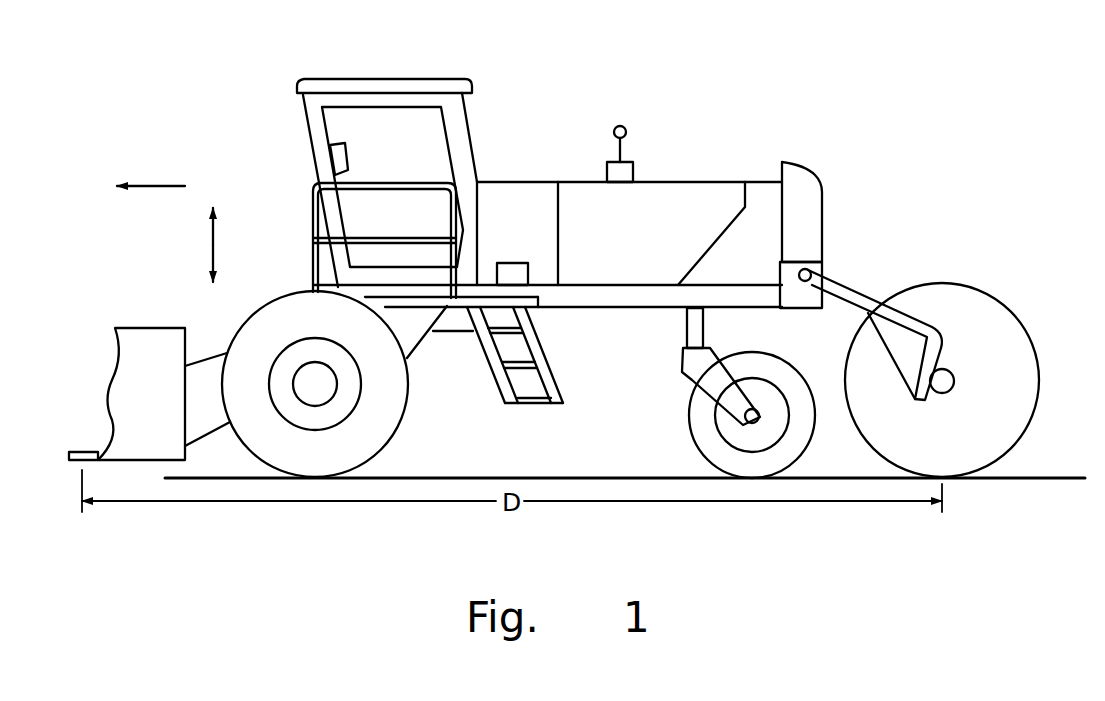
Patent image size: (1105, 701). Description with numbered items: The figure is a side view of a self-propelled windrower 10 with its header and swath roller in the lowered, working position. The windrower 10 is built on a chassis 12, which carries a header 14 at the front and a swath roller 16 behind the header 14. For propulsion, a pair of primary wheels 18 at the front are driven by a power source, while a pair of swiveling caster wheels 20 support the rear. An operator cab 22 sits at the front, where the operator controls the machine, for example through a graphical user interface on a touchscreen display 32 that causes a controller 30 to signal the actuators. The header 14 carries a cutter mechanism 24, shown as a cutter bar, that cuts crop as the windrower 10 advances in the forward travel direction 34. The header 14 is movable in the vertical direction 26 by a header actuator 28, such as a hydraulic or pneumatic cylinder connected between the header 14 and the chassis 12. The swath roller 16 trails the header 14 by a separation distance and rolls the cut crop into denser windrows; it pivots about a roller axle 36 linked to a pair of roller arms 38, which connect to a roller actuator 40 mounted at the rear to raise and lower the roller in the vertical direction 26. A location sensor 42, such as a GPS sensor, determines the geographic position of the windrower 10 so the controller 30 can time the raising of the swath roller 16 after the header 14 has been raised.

The self-propelled windrower 10 is at (623, 90).
The chassis 12 is at (567, 303).
The header 14 is at (138, 328).
The swath roller 16 is at (963, 285).
The primary wheels 18 is at (400, 425).
The caster wheels 20 is at (780, 360).
The operator cab 22 is at (328, 88).
The cutter mechanism 24 is at (90, 452).
The vertical direction 26 is at (229, 245).
The header actuator 28 is at (215, 355).
The controller 30 is at (505, 263).
The touchscreen display 32 is at (336, 168).
The forward travel direction 34 is at (151, 172).
The roller axle 36 is at (945, 383).
The roller arms 38 is at (852, 300).
The roller actuator 40 is at (810, 264).
The location sensor 42 is at (634, 165).